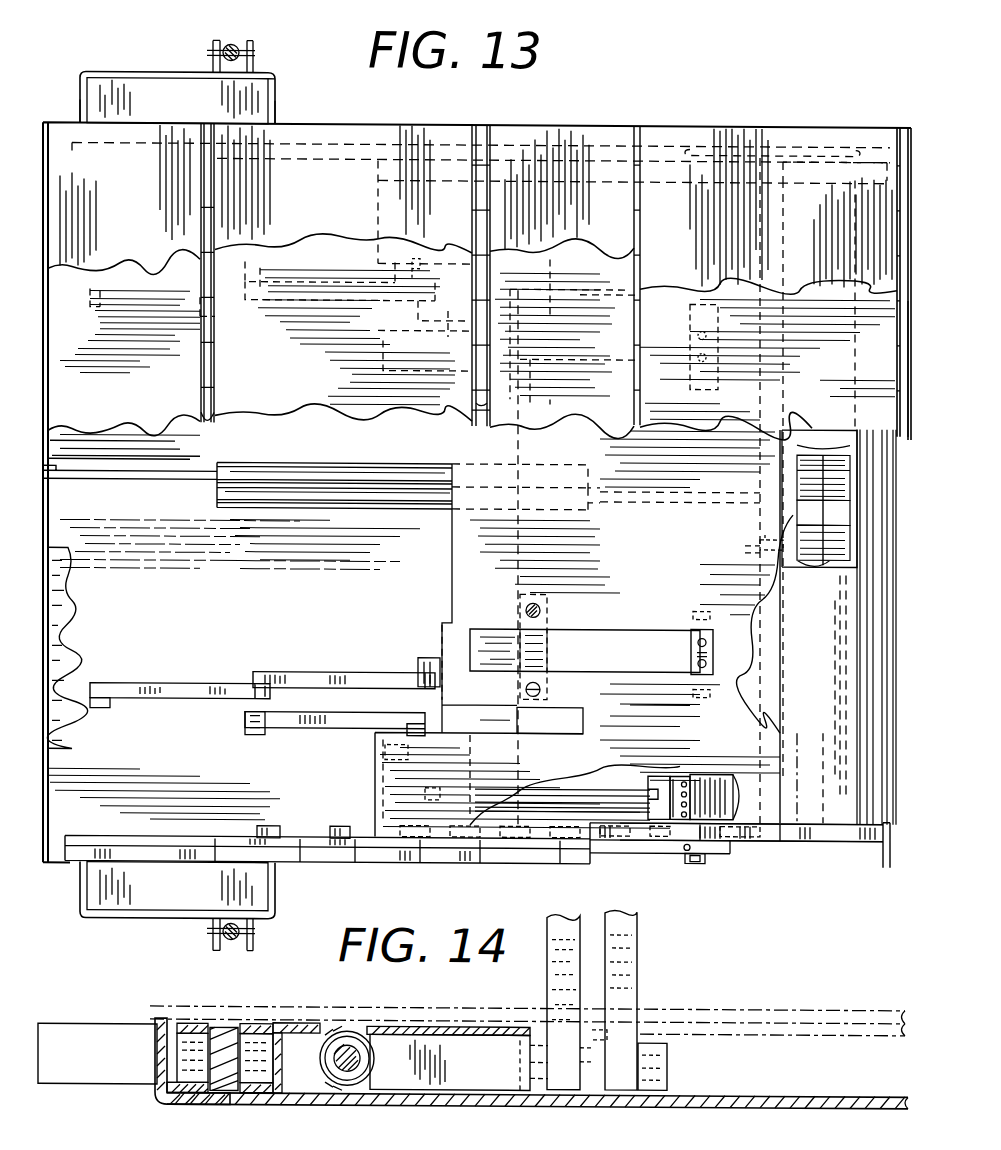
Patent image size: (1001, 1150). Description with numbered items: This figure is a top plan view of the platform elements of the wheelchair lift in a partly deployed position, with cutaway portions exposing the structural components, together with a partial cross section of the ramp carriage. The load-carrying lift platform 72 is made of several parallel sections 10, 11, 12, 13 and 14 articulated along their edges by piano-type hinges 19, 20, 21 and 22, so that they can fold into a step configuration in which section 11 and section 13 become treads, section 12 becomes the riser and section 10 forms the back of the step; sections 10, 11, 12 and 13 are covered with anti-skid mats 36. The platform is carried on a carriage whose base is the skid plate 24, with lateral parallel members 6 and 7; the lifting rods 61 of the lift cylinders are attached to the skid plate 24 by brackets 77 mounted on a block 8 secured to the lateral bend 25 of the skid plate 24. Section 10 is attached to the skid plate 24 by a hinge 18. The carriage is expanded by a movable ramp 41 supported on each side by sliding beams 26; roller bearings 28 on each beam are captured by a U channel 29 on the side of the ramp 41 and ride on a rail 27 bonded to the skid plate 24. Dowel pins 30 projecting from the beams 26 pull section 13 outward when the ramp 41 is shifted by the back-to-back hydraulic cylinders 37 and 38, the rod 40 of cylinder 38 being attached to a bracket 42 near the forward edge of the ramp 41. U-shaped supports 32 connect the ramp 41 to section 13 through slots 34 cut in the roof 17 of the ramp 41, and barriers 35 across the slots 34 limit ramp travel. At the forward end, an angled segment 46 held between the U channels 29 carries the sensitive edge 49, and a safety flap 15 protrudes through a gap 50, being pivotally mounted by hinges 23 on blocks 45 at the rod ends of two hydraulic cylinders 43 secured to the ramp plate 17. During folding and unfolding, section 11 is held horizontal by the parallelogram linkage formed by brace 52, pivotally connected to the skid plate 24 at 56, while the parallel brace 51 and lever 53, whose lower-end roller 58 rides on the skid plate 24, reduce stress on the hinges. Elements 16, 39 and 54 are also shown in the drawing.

In FIG. 13, the parallel member 6 is at (276, 86).
In FIG. 13, the parallel member 7 is at (99, 71).
In FIG. 13, the block 8 is at (268, 109).
In FIG. 14, the block 8 is at (101, 1023).
In FIG. 13, the platform section 10 is at (82, 349).
In FIG. 13, the platform section 11 is at (361, 376).
In FIG. 14, the platform section 11 is at (709, 1005).
In FIG. 13, the platform section 12 is at (590, 399).
In FIG. 13, the platform section 13 is at (820, 390).
In FIG. 13, the platform section 14 is at (900, 322).
In FIG. 13, the safety flap 15 is at (689, 575).
In FIG. 13, the bottom rail 16 is at (770, 840).
In FIG. 13, the roof of the ramp 17 is at (782, 519).
In FIG. 14, the roof of the ramp 17 is at (392, 1024).
In FIG. 13, the hinge 18 is at (70, 614).
In FIG. 13, the piano-type hinge 19 is at (216, 357).
In FIG. 13, the piano-type hinge 20 is at (476, 215).
In FIG. 13, the piano-type hinge 21 is at (640, 259).
In FIG. 13, the piano-type hinge 22 is at (912, 192).
In FIG. 13, the hinge 23 is at (676, 780).
In FIG. 13, the skid plate 24 is at (200, 578).
In FIG. 14, the skid plate 24 is at (388, 1104).
In FIG. 14, the lateral bend 25 is at (157, 1024).
In FIG. 14, the sliding beam 26 is at (231, 1026).
In FIG. 14, the rail 27 is at (196, 1094).
In FIG. 13, the roller bearing 28 is at (336, 824).
In FIG. 14, the roller bearing 28 is at (192, 1032).
In FIG. 13, the U channel 29 is at (838, 840).
In FIG. 14, the U channel 29 is at (280, 1048).
In FIG. 13, the dowel pin 30 is at (681, 846).
In FIG. 13, the U-shaped support 32 is at (692, 651).
In FIG. 13, the slot 34 is at (605, 644).
In FIG. 13, the barrier 35 is at (548, 648).
In FIG. 13, the mat 36 is at (150, 133).
In FIG. 13, the hydraulic cylinder 37 is at (353, 466).
In FIG. 13, the hydraulic cylinder 38 is at (355, 506).
In FIG. 13, the left support bar 39 is at (130, 480).
In FIG. 13, the rod 40 is at (610, 511).
In FIG. 14, the ramp 41 is at (448, 1024).
In FIG. 13, the bracket 42 is at (772, 483).
In FIG. 13, the hydraulic cylinder 43 is at (590, 796).
In FIG. 14, the hydraulic cylinder 43 is at (340, 1033).
In FIG. 13, the block 45 is at (655, 773).
In FIG. 13, the angled segment 46 is at (830, 473).
In FIG. 13, the sensitive edge 49 is at (912, 644).
In FIG. 13, the gap 50 is at (852, 537).
In FIG. 13, the brace 51 is at (192, 661).
In FIG. 13, the brace 52 is at (318, 726).
In FIG. 14, the brace 52 is at (550, 942).
In FIG. 13, the lever 53 is at (330, 669).
In FIG. 14, the lever 53 is at (640, 941).
In FIG. 13, the slide stop 54 is at (108, 707).
In FIG. 13, the pivot connection 56 is at (250, 733).
In FIG. 13, the roller 58 is at (424, 653).
In FIG. 14, the roller 58 is at (668, 1048).
In FIG. 13, the lifting rod 61 is at (234, 43).
In FIG. 13, the lift platform 72 is at (368, 206).
In FIG. 13, the bracket 77 is at (215, 41).